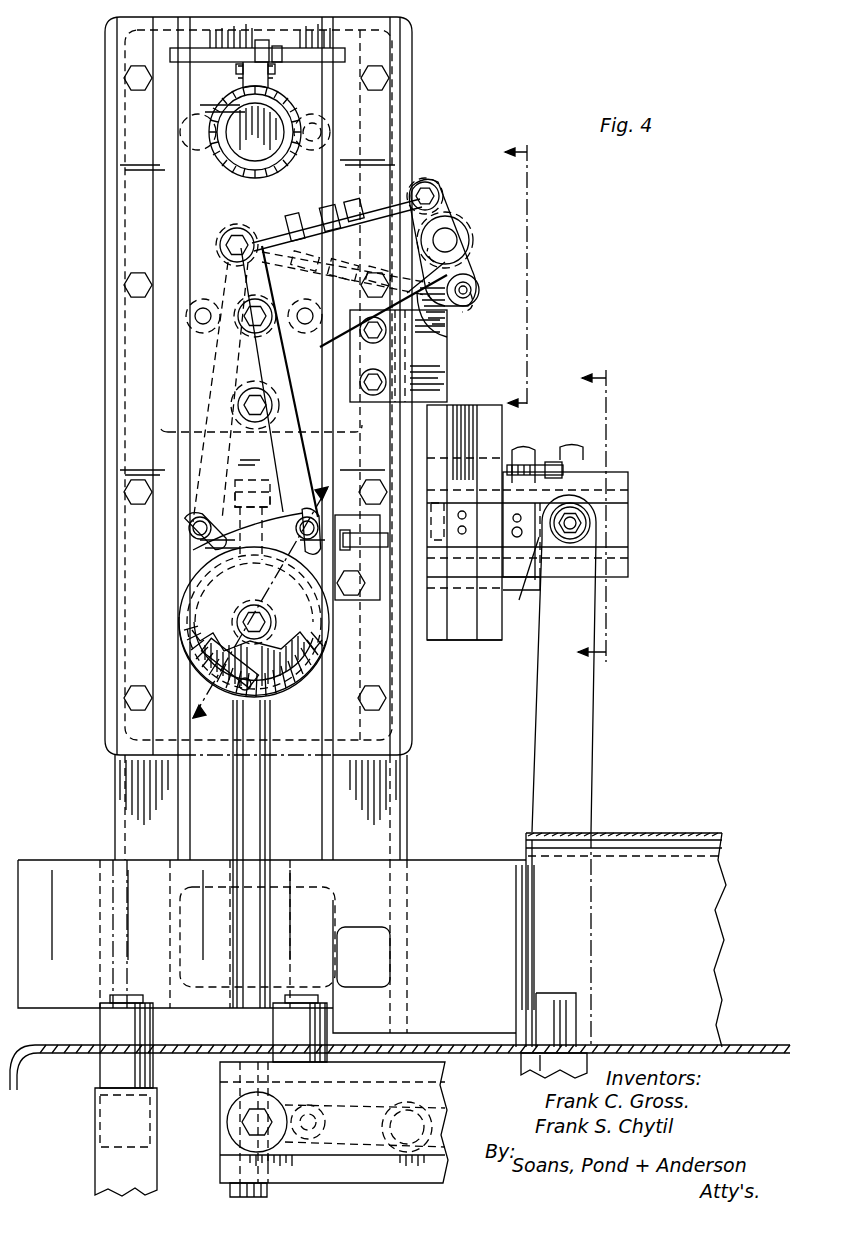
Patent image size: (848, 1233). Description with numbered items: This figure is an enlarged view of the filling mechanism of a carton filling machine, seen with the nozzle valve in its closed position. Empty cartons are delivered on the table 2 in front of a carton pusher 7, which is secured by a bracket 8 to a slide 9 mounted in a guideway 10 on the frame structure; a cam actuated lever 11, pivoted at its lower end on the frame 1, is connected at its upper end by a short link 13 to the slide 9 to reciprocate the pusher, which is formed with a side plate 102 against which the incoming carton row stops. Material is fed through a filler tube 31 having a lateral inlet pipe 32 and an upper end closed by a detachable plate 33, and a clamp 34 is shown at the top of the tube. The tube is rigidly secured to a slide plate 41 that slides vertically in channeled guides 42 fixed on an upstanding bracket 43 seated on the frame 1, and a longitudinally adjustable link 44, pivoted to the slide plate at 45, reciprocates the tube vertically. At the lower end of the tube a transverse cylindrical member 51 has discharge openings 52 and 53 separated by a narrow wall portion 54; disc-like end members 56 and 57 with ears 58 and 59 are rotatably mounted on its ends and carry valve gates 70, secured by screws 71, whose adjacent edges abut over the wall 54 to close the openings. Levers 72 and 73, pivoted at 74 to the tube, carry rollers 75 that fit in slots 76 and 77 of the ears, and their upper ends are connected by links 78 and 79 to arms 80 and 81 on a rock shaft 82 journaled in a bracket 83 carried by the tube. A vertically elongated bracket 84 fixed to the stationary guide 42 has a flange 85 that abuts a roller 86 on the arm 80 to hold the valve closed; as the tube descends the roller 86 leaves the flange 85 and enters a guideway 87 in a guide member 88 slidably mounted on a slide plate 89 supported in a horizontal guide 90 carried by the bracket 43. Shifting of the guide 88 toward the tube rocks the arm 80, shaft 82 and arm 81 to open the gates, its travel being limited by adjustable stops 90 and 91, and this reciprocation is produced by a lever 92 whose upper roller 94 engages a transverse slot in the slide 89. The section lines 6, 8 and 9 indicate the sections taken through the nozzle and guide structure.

The frame 1 is at (100, 1158).
The table 2 is at (741, 1046).
The section line 6- 6 is at (269, 603).
The carton pusher 7 is at (342, 928).
The bracket 8 is at (526, 283).
The slide 9 is at (443, 1100).
The guideway 10 is at (444, 1074).
The cam actuated lever 11 is at (443, 1185).
The short link 13 is at (363, 1147).
The filler tube 31 is at (208, 188).
The inlet pipe 32 is at (248, 153).
The plate 33 is at (197, 45).
The clamp 34 is at (241, 73).
The slide plate 41 is at (279, 44).
The channeled guides 42 is at (128, 142).
The upstanding bracket 43 is at (408, 792).
The longitudinally adjustable link 44 is at (238, 807).
The pivot 45 is at (250, 334).
The cylindrical member 51 is at (182, 643).
The discharge opening 52 is at (227, 697).
The discharge opening 53 is at (275, 700).
The narrow wall portion 54 is at (248, 707).
The disc-like end member 56 is at (328, 643).
The disc-like end member 57 is at (213, 602).
The ear 58 is at (192, 523).
The ear 59 is at (298, 540).
The valve gates 70 is at (200, 675).
The screws 71 is at (244, 622).
The lever 72 is at (218, 368).
The lever 73 is at (289, 380).
The pivot mountings 74 is at (228, 260).
The rollers 75 is at (235, 488).
The slot 76 is at (190, 536).
The slot 77 is at (300, 532).
The link 78 is at (305, 272).
The link 79 is at (312, 213).
The arm 80 is at (467, 262).
The arm 81 is at (440, 205).
The rock shaft 82 is at (445, 240).
The bracket 83 is at (445, 345).
The vertically elongated bracket 84 is at (433, 367).
The vertically elongated flange 85 is at (447, 333).
The roller 86 is at (483, 287).
The guideway 87 is at (480, 413).
The guide member 88 is at (492, 632).
The slide plate 89 is at (523, 580).
The horizontally extending guide 90 is at (358, 515).
The adjustable stop member 91 is at (539, 480).
The lever 92 is at (577, 790).
The roller 94 is at (580, 548).
The side plate 102 is at (454, 873).